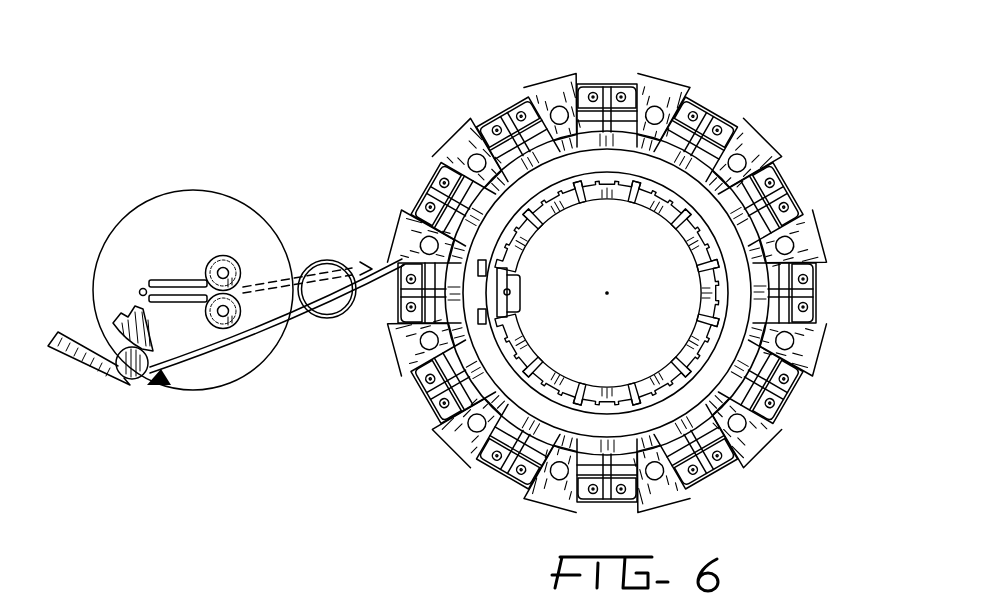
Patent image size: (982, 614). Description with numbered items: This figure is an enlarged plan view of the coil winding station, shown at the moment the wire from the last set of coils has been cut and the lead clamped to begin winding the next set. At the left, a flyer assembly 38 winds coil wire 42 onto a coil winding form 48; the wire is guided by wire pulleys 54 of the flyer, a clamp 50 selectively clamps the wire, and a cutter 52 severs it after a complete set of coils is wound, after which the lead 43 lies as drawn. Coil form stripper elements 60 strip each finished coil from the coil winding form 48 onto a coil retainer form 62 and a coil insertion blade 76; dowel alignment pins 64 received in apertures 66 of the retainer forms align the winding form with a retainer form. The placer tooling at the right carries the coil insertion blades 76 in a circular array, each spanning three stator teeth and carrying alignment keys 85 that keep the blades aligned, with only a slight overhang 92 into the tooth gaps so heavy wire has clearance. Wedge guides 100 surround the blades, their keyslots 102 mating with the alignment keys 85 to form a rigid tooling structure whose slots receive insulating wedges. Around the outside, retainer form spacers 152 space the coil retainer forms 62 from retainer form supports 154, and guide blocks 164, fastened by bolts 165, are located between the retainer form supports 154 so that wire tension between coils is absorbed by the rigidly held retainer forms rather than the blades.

The flyer assembly 38 is at (276, 160).
The coil wire 42 is at (272, 281).
The lead 43 is at (235, 383).
The coil winding form 48 is at (463, 298).
The clamp 50 is at (113, 354).
The cutter 52 is at (82, 368).
The wire pulleys 54 is at (229, 255).
The coil form stripper 60 is at (522, 292).
The coil retainer form 62 is at (441, 412).
The dowel alignment pins 64 is at (411, 306).
The apertures 66 is at (594, 93).
The coil insertion blades 76 is at (525, 338).
The alignment keys 85 is at (703, 183).
The overhang 92 is at (631, 397).
The wedge guides 100 is at (597, 390).
The keyslots 102 is at (690, 212).
The retainer form spacers 152 is at (420, 381).
The retainer form supports 154 is at (490, 455).
The guide blocks 164 is at (668, 490).
The bolts 165 is at (555, 473).